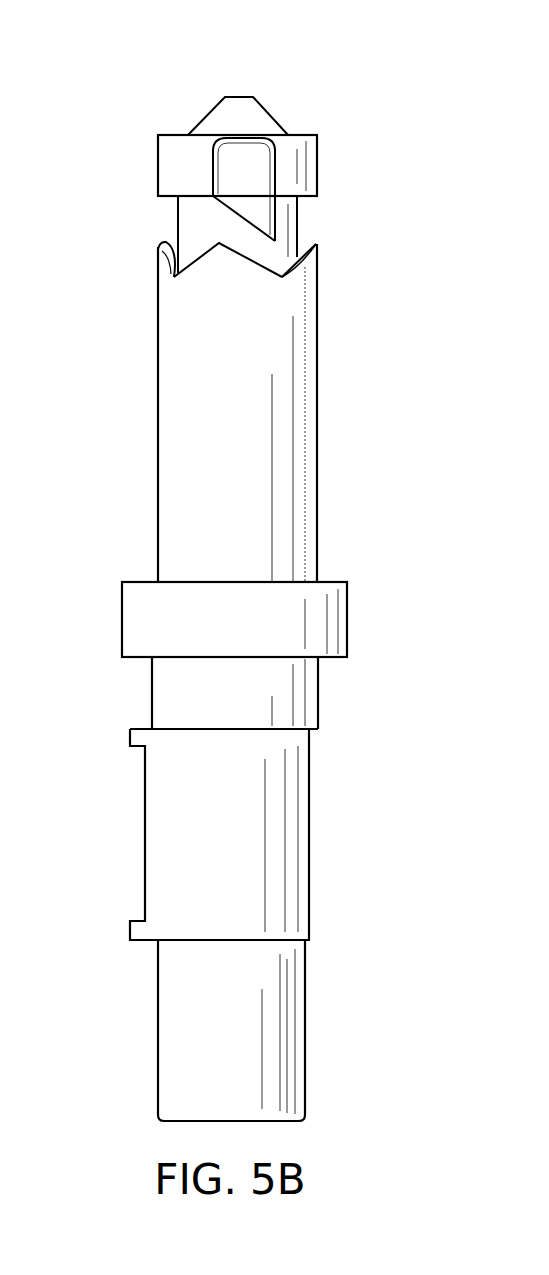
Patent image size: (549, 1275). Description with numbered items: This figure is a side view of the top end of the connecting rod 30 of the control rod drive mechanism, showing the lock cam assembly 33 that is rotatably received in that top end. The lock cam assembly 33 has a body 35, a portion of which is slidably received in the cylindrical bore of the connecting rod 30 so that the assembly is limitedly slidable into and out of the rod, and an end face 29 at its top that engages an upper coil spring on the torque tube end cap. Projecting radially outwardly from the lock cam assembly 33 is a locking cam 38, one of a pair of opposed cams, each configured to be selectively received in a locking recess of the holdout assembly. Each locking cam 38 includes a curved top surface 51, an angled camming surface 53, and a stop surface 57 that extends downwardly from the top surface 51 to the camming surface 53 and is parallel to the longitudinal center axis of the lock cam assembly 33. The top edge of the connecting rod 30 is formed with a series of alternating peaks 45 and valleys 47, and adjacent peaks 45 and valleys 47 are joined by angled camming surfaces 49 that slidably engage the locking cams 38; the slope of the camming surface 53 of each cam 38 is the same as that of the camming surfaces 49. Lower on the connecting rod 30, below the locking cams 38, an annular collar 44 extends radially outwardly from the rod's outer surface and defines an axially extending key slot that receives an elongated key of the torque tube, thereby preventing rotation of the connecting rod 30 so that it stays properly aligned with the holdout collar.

The end face 29 is at (300, 136).
The connecting rod 30 is at (128, 492).
The lock cam assembly 33 is at (357, 186).
The body 35 is at (303, 236).
The locking cam 38 is at (240, 172).
The annular collar 44 is at (372, 621).
The peaks 45 is at (162, 249).
The valleys 47 is at (279, 280).
The angled camming surfaces 49 is at (221, 247).
The curved top surface 51 is at (252, 112).
The angled camming surface 53 is at (237, 228).
The stop surface 57 is at (290, 184).